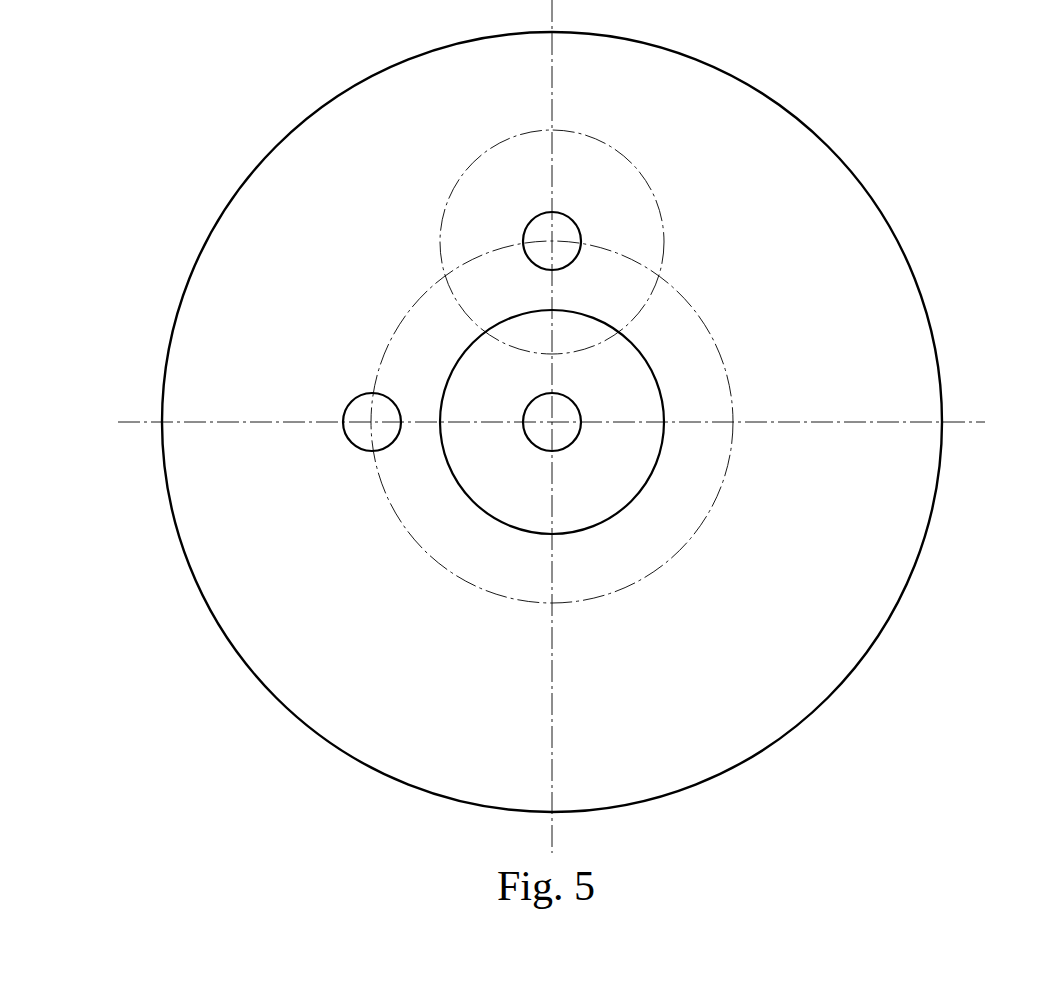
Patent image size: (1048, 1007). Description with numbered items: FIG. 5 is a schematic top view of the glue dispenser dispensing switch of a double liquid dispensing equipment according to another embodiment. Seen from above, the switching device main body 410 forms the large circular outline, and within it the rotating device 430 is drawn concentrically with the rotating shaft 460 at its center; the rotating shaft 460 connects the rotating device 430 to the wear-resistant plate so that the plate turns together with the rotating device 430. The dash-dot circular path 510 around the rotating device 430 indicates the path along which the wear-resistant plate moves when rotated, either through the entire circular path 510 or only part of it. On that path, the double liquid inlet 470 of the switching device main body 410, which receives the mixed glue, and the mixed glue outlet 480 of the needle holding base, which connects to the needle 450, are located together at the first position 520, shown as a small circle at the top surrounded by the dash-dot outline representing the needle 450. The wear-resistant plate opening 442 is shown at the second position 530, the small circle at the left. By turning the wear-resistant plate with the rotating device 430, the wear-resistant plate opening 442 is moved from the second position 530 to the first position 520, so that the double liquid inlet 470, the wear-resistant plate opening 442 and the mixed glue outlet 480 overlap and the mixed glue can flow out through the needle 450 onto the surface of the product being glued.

The switching device main body 410 is at (893, 230).
The rotating device 430 is at (664, 440).
The wear-resistant plate opening 442 is at (286, 442).
The needle 450 is at (445, 212).
The rotating shaft 460 is at (572, 398).
The double liquid inlet 470 is at (638, 207).
The mixed glue outlet 480 is at (638, 207).
The circular path 510 is at (713, 337).
The first position 520 is at (560, 226).
The second position 530 is at (357, 413).